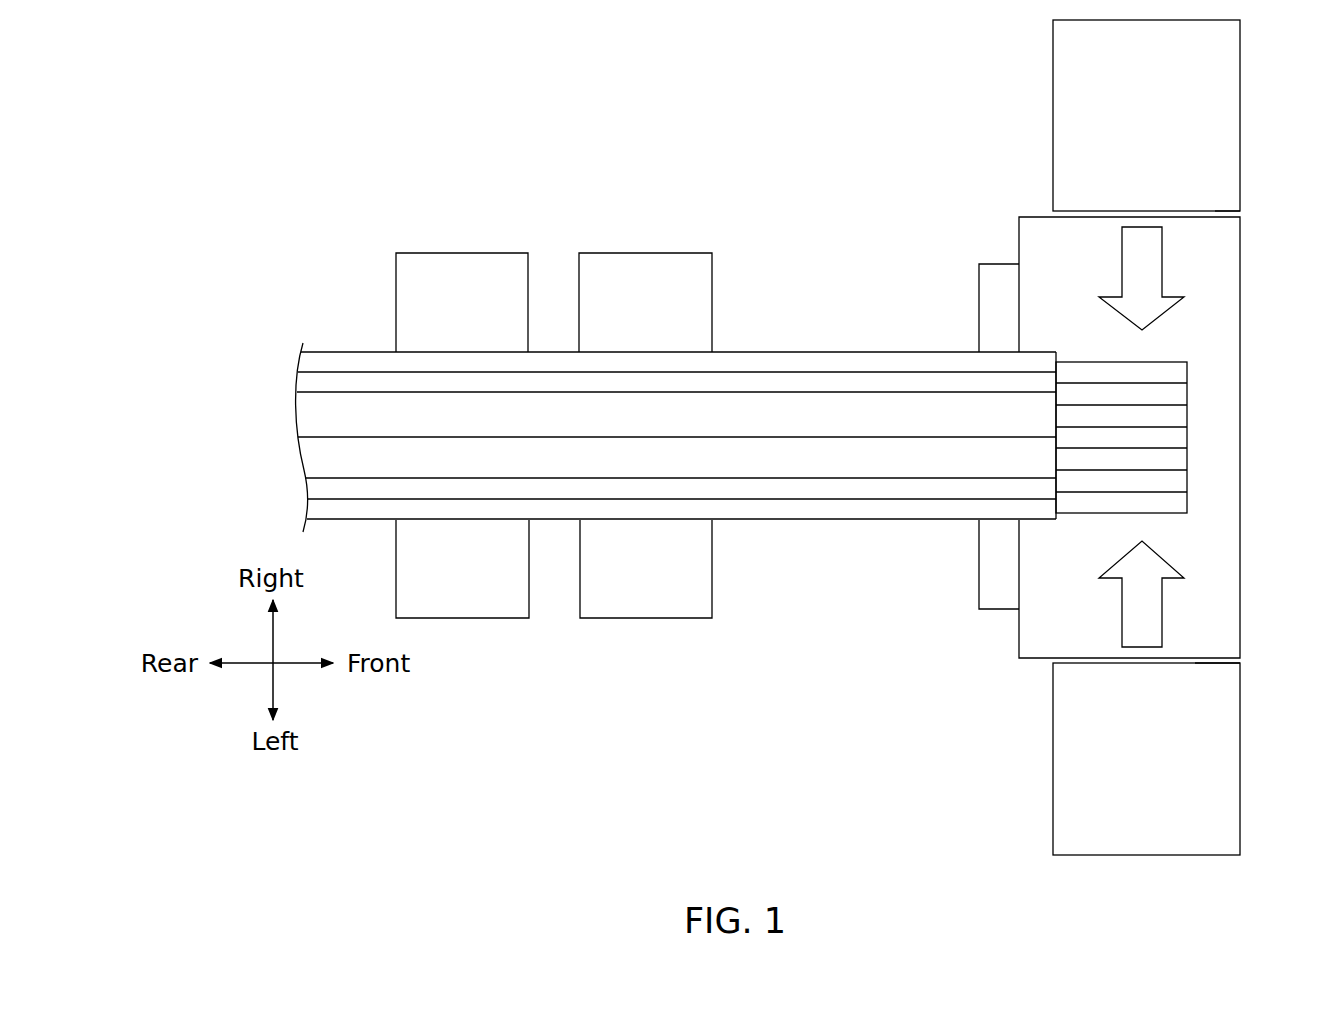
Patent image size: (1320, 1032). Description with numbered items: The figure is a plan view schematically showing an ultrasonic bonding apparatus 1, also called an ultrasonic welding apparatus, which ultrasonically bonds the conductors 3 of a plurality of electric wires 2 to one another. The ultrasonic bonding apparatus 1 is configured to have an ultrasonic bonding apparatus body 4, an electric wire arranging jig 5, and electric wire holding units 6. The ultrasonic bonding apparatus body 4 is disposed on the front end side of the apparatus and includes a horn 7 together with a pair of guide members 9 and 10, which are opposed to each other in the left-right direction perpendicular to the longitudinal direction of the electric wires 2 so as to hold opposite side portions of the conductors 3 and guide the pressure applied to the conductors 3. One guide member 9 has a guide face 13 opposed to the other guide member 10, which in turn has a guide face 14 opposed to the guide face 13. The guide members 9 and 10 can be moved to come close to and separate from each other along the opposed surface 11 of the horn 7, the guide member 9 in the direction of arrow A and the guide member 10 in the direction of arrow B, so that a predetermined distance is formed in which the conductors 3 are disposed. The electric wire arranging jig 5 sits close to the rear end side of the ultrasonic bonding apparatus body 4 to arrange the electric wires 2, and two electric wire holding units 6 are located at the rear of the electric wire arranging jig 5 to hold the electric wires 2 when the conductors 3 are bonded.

The ultrasonic bonding apparatus 1 is at (425, 100).
The electric wires 2 is at (830, 351).
The conductors 3 is at (1187, 395).
The ultrasonic bonding apparatus body 4 is at (1006, 140).
The electric wire arranging jig 5 is at (978, 295).
The electric wire holding units 6 is at (486, 252).
The horn 7 is at (1240, 348).
The guide member 9 is at (1198, 92).
The guide member 10 is at (1203, 724).
The opposed surface 11 is at (1213, 486).
The guide face 13 is at (1216, 212).
The guide face 14 is at (1195, 663).